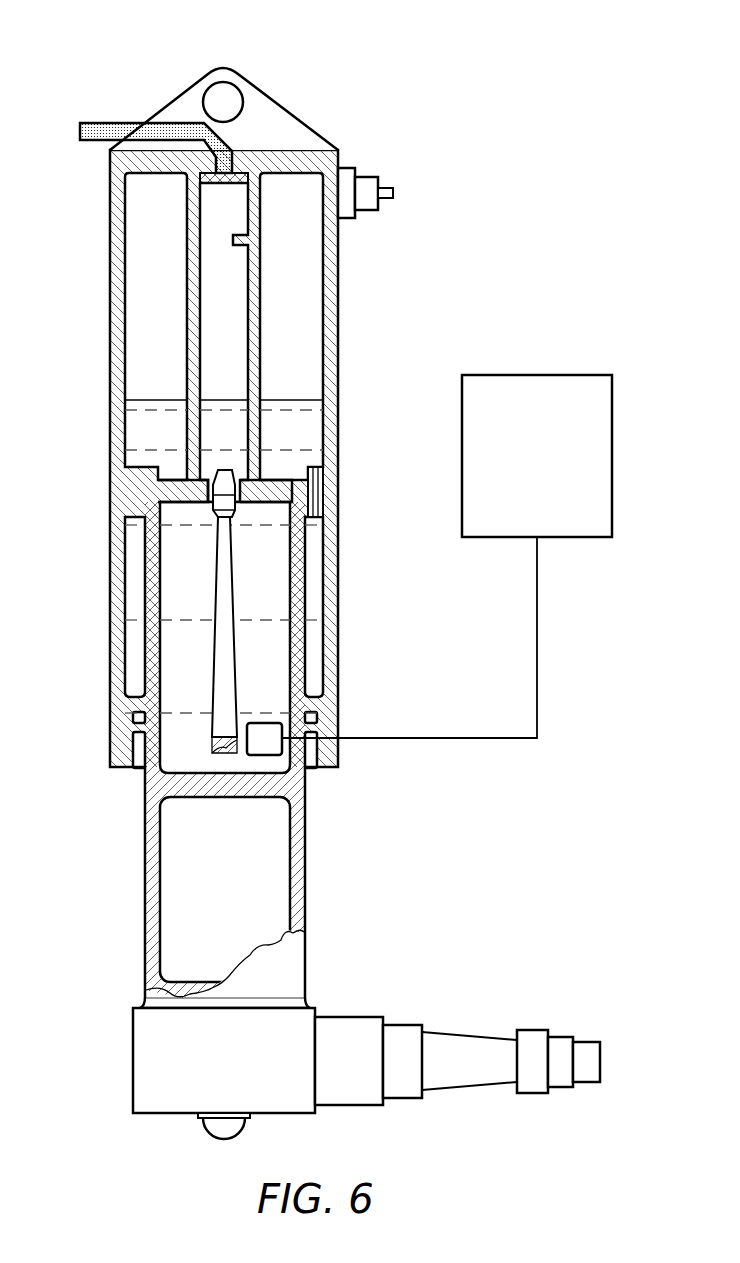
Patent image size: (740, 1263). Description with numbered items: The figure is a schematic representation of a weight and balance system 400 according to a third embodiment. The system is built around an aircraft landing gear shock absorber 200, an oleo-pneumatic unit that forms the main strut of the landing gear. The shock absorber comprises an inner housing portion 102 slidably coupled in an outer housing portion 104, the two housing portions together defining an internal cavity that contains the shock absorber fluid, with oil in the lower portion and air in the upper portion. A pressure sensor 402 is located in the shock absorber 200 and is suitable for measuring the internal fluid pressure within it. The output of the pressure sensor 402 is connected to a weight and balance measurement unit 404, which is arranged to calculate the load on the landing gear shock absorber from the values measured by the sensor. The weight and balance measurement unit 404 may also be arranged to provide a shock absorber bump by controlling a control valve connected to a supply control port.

The aircraft landing gear shock absorber 200 is at (142, 58).
The weight and balance system 400 is at (500, 136).
The outer housing portion 104 is at (110, 309).
The weight and balance measurement unit 404 is at (582, 375).
The pressure sensor 402 is at (265, 756).
The inner housing portion 102 is at (305, 875).